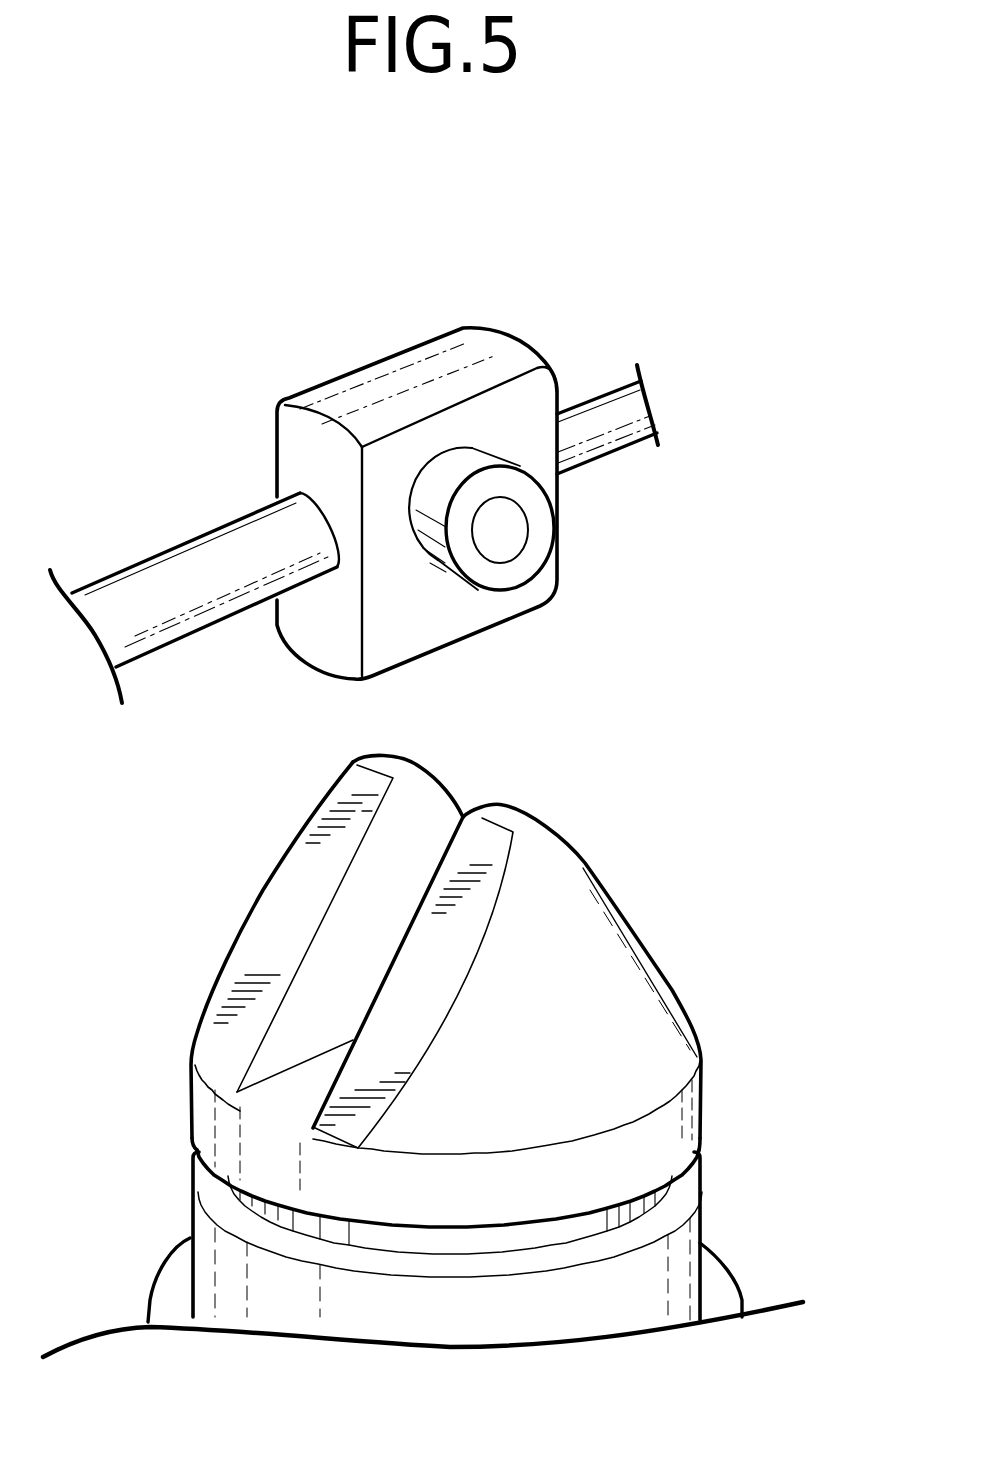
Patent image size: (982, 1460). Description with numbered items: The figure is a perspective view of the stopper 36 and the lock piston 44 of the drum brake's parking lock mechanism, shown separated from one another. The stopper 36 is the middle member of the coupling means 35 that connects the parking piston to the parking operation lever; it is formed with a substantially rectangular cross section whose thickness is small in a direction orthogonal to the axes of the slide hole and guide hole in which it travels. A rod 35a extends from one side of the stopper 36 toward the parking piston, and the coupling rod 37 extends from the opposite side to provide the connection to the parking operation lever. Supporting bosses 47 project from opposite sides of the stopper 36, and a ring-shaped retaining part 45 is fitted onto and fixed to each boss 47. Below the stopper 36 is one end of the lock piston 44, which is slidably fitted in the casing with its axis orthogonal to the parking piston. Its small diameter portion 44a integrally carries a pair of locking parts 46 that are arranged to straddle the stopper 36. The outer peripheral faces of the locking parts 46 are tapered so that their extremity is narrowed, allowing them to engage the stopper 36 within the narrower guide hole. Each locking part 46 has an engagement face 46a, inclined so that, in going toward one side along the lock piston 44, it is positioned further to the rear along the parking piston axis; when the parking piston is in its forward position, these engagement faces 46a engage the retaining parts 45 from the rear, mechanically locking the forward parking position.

The coupling means 35 is at (354, 454).
The shaft portion 35a is at (193, 570).
The stopper 36 is at (323, 637).
The coupling rod 37 is at (605, 418).
The retaining part 45 is at (534, 558).
The supporting boss 47 is at (507, 525).
The locking part 46 is at (429, 968).
The engagement face 46a is at (267, 943).
The lock piston 44 is at (429, 1254).
The small diameter portion 44a is at (217, 1259).